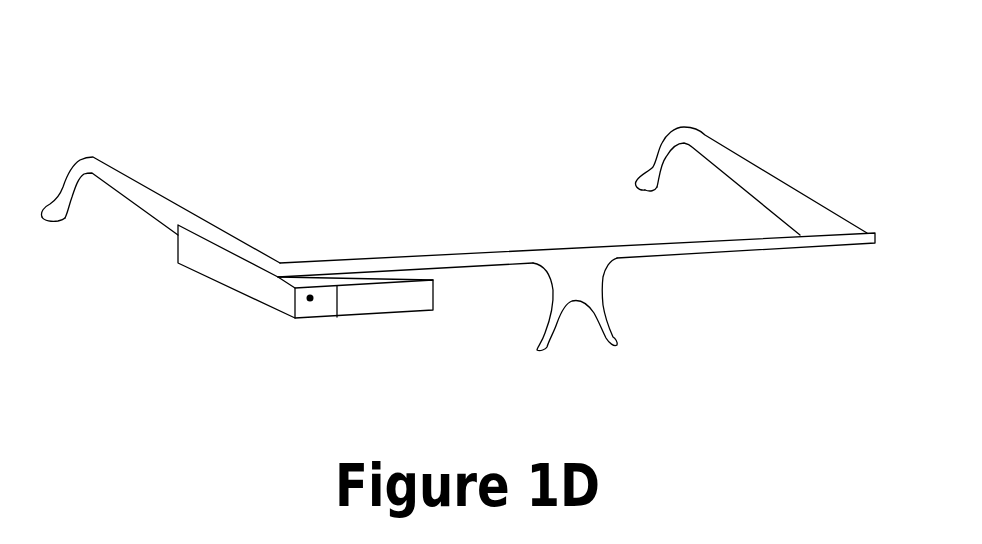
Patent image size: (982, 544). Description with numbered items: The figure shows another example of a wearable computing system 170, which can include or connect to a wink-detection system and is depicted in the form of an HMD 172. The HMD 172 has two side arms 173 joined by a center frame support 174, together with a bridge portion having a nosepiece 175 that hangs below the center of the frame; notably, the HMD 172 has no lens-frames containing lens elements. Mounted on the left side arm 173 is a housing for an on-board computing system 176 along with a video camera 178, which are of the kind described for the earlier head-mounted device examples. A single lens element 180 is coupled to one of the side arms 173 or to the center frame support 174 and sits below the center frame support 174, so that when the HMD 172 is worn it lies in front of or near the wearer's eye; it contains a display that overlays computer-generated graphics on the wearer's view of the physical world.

The wearable computing system 170 is at (472, 112).
The HMD 172 is at (760, 139).
The side arms 173 is at (143, 197).
The center frame support 174 is at (477, 258).
The nosepiece 175 is at (600, 297).
The on-board computing system 176 is at (215, 285).
The video camera 178 is at (310, 301).
The single lens element 180 is at (388, 315).